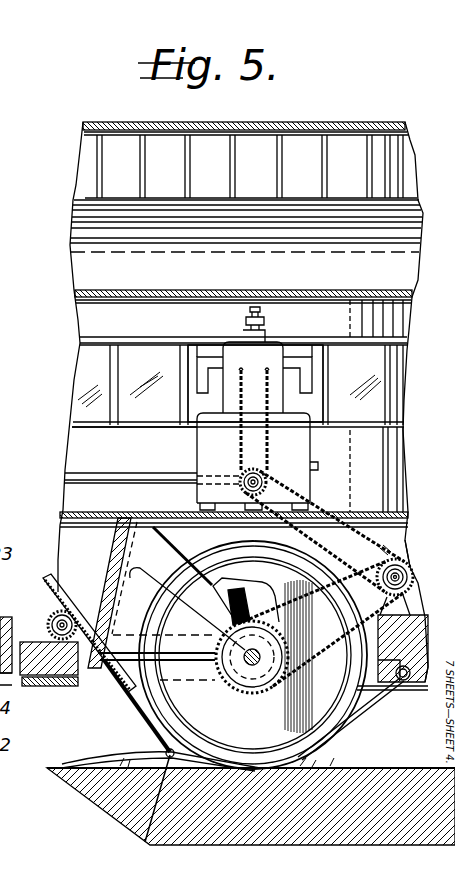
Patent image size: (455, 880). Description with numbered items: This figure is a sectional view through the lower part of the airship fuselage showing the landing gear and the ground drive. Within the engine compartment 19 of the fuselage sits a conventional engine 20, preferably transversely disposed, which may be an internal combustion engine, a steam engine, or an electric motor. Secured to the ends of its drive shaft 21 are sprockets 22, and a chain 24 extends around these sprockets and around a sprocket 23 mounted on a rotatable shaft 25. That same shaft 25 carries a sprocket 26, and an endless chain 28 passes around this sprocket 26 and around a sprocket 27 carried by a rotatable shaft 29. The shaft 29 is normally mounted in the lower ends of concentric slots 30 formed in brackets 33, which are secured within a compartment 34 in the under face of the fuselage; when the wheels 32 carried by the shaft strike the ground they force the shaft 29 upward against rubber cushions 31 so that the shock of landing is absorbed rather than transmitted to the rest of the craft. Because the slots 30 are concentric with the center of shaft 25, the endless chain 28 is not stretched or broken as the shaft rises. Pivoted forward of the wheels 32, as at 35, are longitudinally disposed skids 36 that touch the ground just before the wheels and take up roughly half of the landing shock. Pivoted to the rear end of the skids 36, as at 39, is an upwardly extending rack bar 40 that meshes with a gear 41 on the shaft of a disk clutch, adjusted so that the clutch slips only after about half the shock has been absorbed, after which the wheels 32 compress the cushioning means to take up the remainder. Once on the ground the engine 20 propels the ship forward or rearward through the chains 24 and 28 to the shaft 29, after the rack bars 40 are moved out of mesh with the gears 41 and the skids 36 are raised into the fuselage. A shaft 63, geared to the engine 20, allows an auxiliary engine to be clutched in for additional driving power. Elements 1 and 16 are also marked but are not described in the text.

The car body 1 is at (63, 497).
The window 16 is at (267, 402).
The engine compartment 19 is at (131, 445).
The engine 20 is at (257, 408).
The drive shaft 21 is at (254, 470).
The sprockets 22 is at (268, 478).
The sprocket 23 is at (410, 562).
The chain 24 is at (408, 530).
The rotatable shaft 25 is at (413, 578).
The sprocket 26 is at (407, 600).
The sprocket 27 is at (255, 688).
The endless chain 28 is at (322, 623).
The rotatable shaft 29 is at (240, 677).
The concentric slots 30 is at (270, 580).
The rubber cushions 31 is at (232, 602).
The wheels 32 is at (155, 690).
The brackets 33 is at (165, 527).
The compartment 34 is at (140, 520).
The pivot 35 is at (405, 680).
The skids 36 is at (347, 727).
The pivot 39 is at (161, 808).
The rack bar 40 is at (142, 722).
The gear 41 is at (52, 614).
The shaft 63 is at (97, 480).